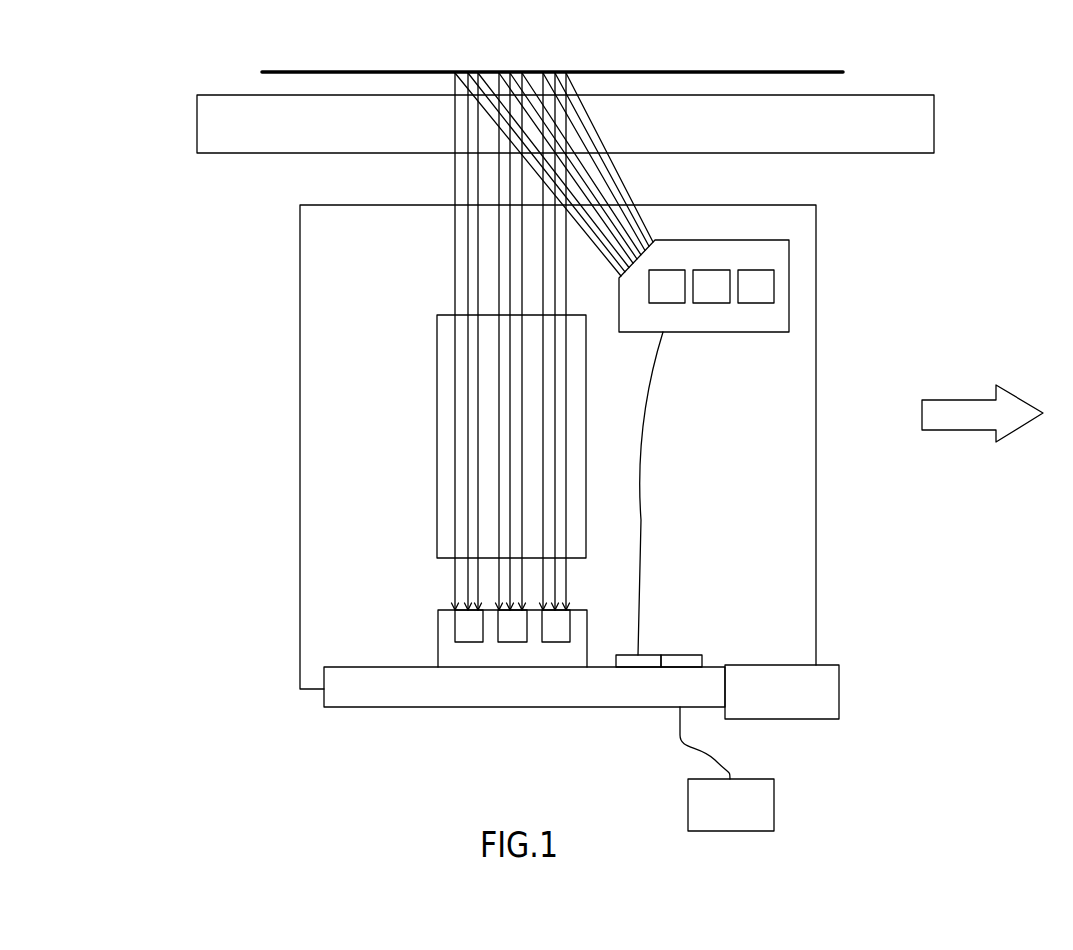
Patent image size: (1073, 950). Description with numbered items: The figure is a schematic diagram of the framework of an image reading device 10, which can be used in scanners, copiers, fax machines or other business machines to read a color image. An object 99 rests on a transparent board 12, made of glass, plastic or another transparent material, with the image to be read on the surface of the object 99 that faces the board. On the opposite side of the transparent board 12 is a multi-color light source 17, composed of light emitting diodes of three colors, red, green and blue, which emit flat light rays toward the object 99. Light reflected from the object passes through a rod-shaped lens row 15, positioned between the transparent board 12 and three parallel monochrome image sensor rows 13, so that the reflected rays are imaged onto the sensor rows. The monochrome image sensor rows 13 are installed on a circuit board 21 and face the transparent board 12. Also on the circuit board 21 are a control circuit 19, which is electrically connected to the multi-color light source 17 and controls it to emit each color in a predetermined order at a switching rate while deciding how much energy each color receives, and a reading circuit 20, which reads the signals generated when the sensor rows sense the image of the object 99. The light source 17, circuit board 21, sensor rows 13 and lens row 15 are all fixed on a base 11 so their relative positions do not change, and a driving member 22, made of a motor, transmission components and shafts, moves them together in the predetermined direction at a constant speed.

The image reading device 10 is at (232, 645).
The base 11 is at (300, 517).
The transparent board 12 is at (858, 153).
The monochrome image sensor rows 13 is at (468, 632).
The rod-shaped lens row 15 is at (437, 437).
The multi-color light source 17 is at (789, 318).
The control circuit 19 is at (652, 655).
The reading circuit 20 is at (685, 655).
The circuit board 21 is at (717, 667).
The driving member 22 is at (774, 793).
The object 99 is at (775, 72).